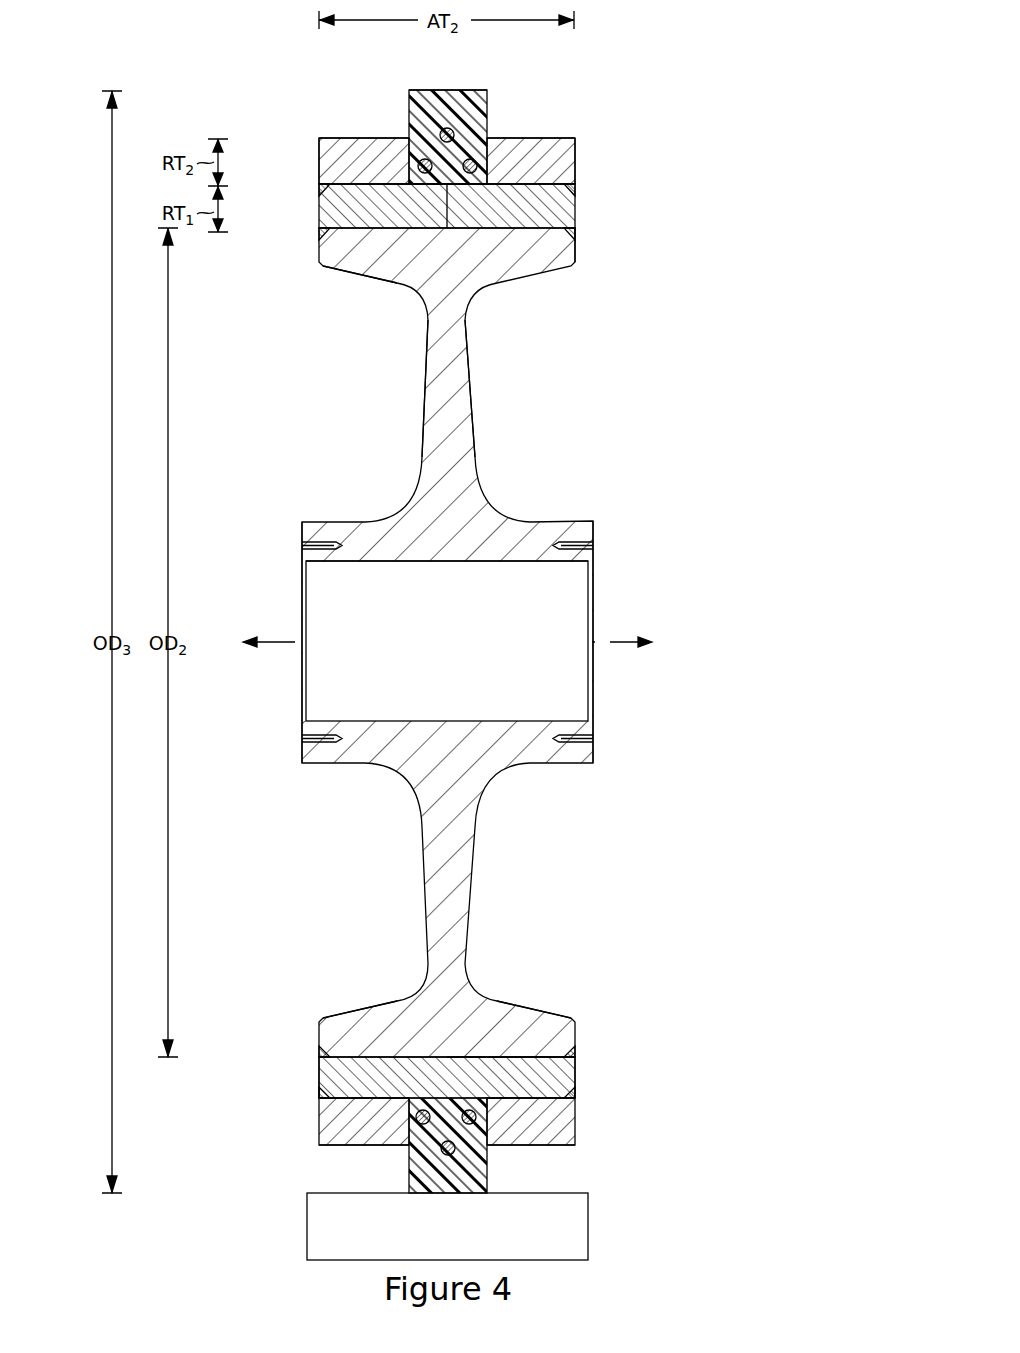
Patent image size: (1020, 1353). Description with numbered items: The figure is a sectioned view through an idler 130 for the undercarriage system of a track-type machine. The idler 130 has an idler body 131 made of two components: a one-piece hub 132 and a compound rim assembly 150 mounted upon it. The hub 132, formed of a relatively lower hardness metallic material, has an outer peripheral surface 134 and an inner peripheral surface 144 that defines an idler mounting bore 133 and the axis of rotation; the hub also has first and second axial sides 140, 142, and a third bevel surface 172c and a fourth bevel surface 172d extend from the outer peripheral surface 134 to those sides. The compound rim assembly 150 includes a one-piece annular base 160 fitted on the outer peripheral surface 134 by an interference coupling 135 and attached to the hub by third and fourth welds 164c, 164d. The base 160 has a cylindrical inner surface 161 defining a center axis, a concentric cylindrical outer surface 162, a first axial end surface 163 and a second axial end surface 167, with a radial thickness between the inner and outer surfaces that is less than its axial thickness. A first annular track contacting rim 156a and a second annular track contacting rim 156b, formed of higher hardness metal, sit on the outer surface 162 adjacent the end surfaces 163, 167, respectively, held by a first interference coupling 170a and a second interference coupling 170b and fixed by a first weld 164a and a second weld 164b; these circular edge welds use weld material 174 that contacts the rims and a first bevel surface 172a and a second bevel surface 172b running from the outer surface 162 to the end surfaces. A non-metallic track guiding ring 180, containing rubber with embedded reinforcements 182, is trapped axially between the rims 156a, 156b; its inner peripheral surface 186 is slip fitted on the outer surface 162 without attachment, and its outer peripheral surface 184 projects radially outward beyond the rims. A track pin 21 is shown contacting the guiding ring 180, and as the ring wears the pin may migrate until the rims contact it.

The track pin 21 is at (589, 1226).
The idler 130 is at (748, 445).
The idler body 131 is at (598, 520).
The one-piece hub 132 is at (553, 525).
The idler mounting bore 133 is at (556, 661).
The outer peripheral surface 134 is at (528, 222).
The interference coupling 135 is at (361, 222).
The first axial side 140 is at (375, 464).
The second axial side 142 is at (510, 464).
The inner peripheral surface 144 is at (568, 566).
The compound rim assembly 150 is at (289, 134).
The first annular track contacting rim 156a is at (329, 140).
The second annular track contacting rim 156b is at (565, 140).
The one-piece annular base 160 is at (335, 231).
The cylindrical inner surface 161 is at (347, 238).
The cylindrical outer surface 162 is at (536, 168).
The first axial end surface 163 is at (316, 208).
The first weld 164a is at (315, 1089).
The second weld 164b is at (580, 1089).
The third weld 164c is at (318, 1058).
The fourth weld 164d is at (577, 1058).
The second axial end surface 167 is at (580, 208).
The first interference coupling 170a is at (322, 1018).
The second interference coupling 170b is at (571, 1018).
The first bevel surface 172a is at (321, 1100).
The second bevel surface 172b is at (574, 1100).
The third bevel surface 172c is at (321, 1048).
The fourth bevel surface 172d is at (574, 1048).
The weld material 174 is at (318, 187).
The track guiding ring 180 is at (484, 90).
The embedded reinforcements 182 is at (455, 131).
The outer peripheral surface 184 is at (440, 84).
The inner peripheral surface 186 is at (446, 193).